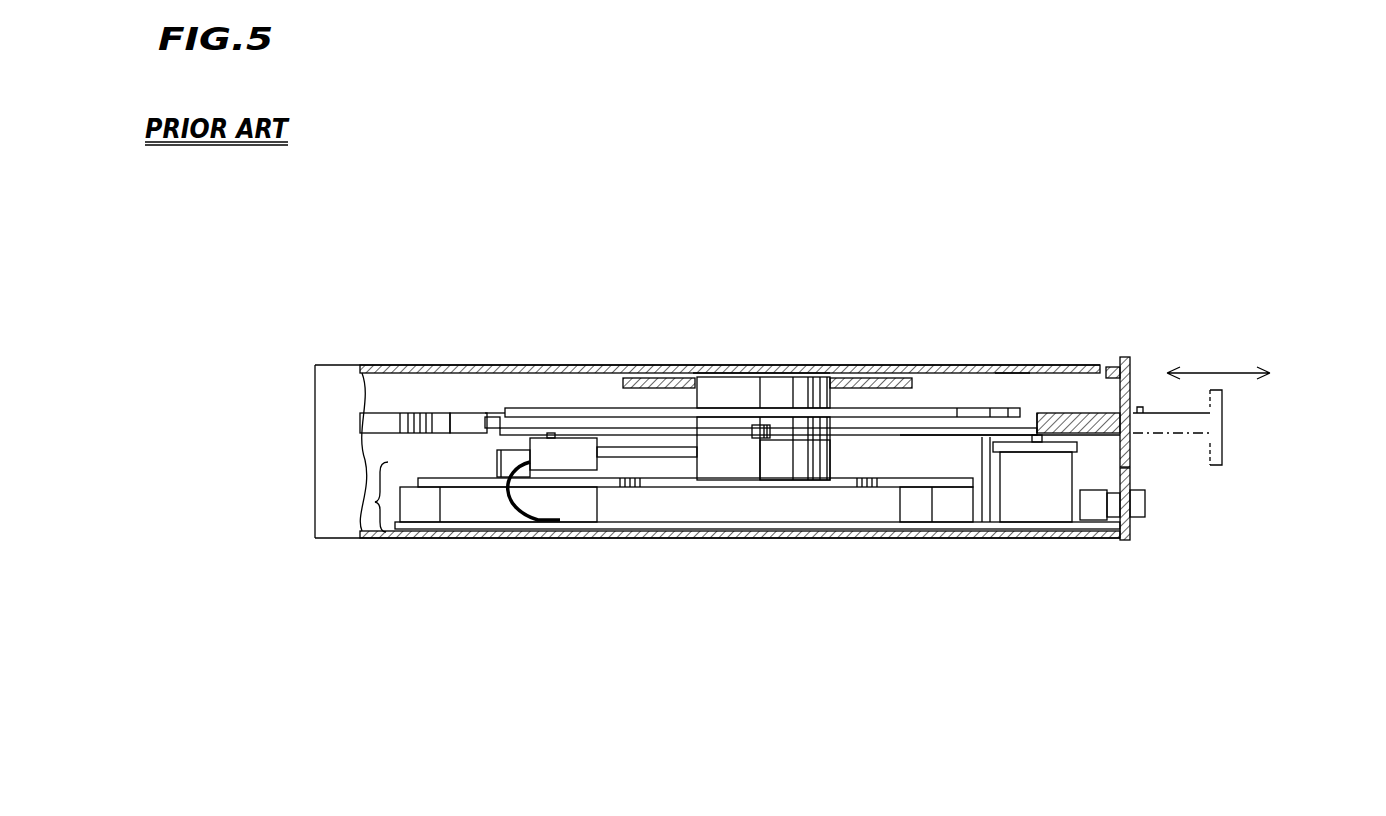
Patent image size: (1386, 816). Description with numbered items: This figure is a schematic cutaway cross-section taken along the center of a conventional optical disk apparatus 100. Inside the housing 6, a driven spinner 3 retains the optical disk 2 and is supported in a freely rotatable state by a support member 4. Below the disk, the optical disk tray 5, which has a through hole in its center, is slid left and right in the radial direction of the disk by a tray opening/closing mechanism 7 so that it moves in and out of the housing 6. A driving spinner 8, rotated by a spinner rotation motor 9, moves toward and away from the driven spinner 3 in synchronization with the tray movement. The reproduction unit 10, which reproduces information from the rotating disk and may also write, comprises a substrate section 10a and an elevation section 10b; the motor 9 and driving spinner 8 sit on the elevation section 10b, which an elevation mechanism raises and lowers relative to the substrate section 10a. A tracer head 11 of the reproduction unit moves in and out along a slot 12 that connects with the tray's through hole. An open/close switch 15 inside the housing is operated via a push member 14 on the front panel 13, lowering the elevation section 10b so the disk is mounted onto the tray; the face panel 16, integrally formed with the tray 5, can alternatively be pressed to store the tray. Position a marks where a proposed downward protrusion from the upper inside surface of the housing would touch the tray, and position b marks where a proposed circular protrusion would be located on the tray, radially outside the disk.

The optical disk apparatus 100 is at (939, 167).
The optical disk 2 is at (520, 407).
The driven spinner 3 is at (743, 388).
The support member 4 is at (641, 378).
The optical disk tray 5 is at (1073, 413).
The housing 6 is at (347, 365).
The tray opening/closing mechanism 7 is at (1025, 510).
The driving spinner 8 is at (722, 422).
The spinner rotation motor 9 is at (772, 467).
The reproduction unit 10 is at (380, 483).
The substrate section 10a is at (424, 530).
The elevation section 10b is at (474, 470).
The tracer head 11 is at (570, 458).
The slot 12 is at (488, 433).
The front panel 13 is at (1133, 528).
The push member 14 is at (1145, 504).
The open/close switch 15 is at (1098, 510).
The face panel 16 is at (1132, 455).
The position of protrusion on upper inside surface of housing a is at (1004, 380).
The position of circular protrusion on optical disk tray b is at (1044, 413).